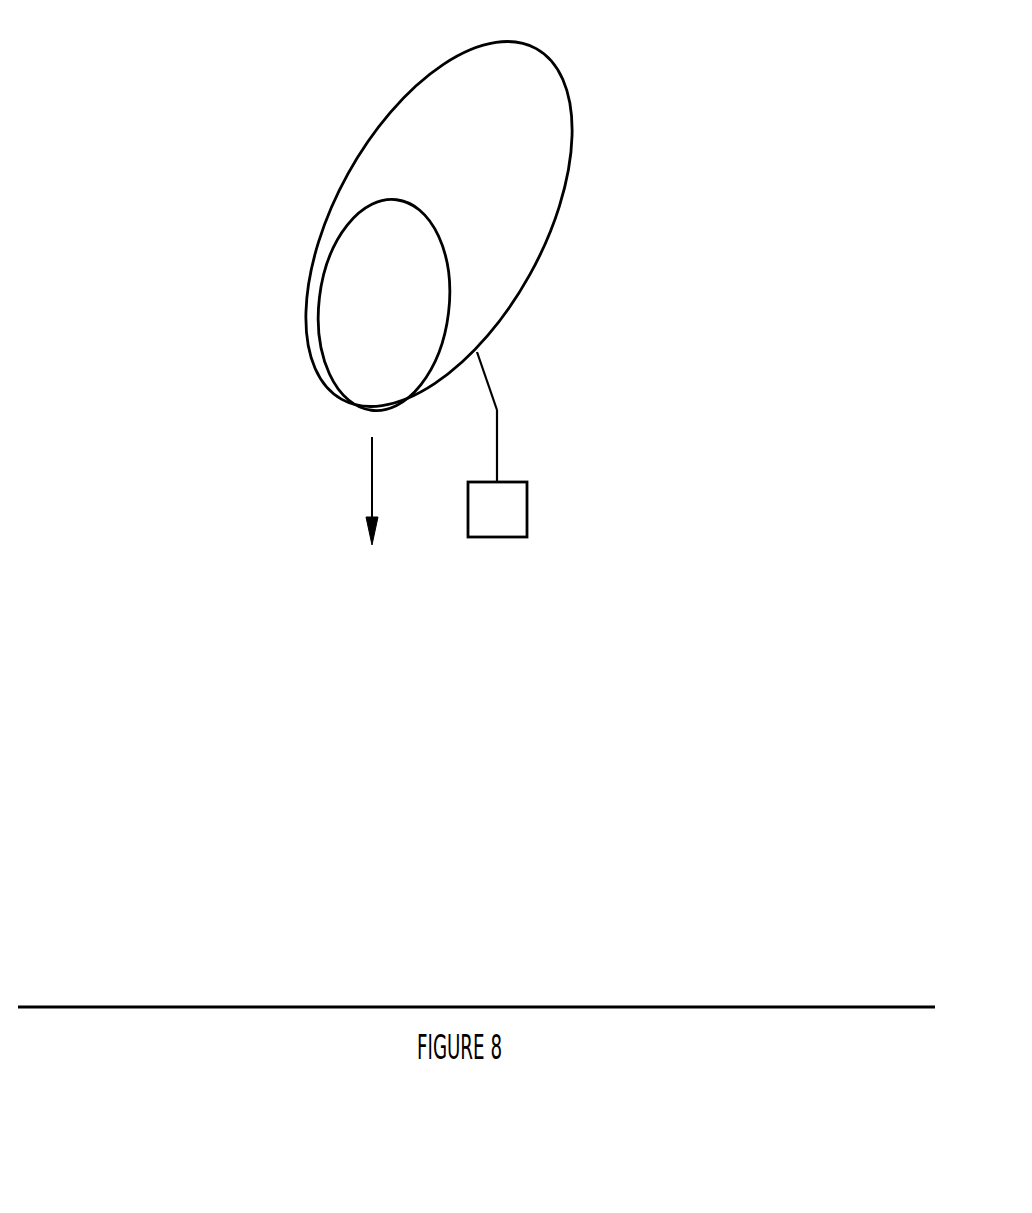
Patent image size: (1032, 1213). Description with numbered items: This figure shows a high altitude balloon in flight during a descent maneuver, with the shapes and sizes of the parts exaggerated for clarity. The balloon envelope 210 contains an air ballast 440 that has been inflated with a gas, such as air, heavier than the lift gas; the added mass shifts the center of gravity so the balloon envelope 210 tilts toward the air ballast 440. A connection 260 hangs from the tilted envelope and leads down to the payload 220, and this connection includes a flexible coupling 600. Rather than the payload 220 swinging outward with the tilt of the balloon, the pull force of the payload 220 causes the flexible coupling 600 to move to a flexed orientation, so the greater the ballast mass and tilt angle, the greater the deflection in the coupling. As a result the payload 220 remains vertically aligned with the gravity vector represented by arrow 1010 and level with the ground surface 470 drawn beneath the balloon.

The balloon envelope 210 is at (352, 165).
The air ballast 440 is at (329, 254).
The connection 260 is at (487, 380).
The flexible coupling 600 is at (497, 410).
The payload 220 is at (527, 495).
The arrow representing the gravity vector 1010 is at (370, 478).
The ground surface 470 is at (186, 1005).